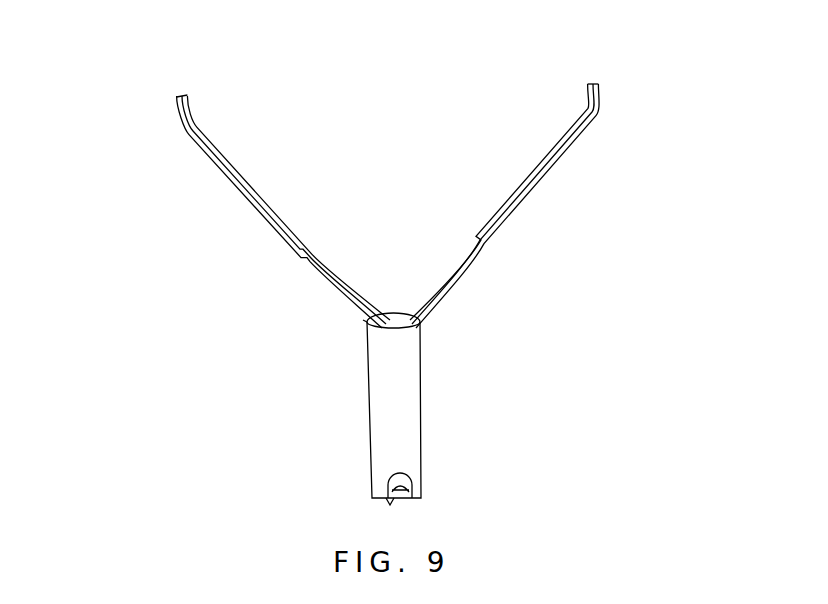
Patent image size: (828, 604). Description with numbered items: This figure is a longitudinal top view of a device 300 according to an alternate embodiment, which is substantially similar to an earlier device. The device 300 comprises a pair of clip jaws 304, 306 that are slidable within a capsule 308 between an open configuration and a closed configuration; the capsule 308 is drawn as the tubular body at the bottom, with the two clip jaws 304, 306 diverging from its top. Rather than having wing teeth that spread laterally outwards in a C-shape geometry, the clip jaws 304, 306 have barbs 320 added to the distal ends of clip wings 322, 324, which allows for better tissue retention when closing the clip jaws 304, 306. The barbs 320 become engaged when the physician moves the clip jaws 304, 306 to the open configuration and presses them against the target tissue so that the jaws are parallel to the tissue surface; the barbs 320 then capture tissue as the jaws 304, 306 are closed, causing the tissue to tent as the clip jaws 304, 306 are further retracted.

The device 300 is at (130, 92).
The clip jaw 304 is at (240, 171).
The clip jaw 306 is at (535, 166).
The capsule 308 is at (369, 430).
The barbs 320 is at (186, 96).
The clip wing 322 is at (263, 218).
The clip wing 324 is at (511, 223).